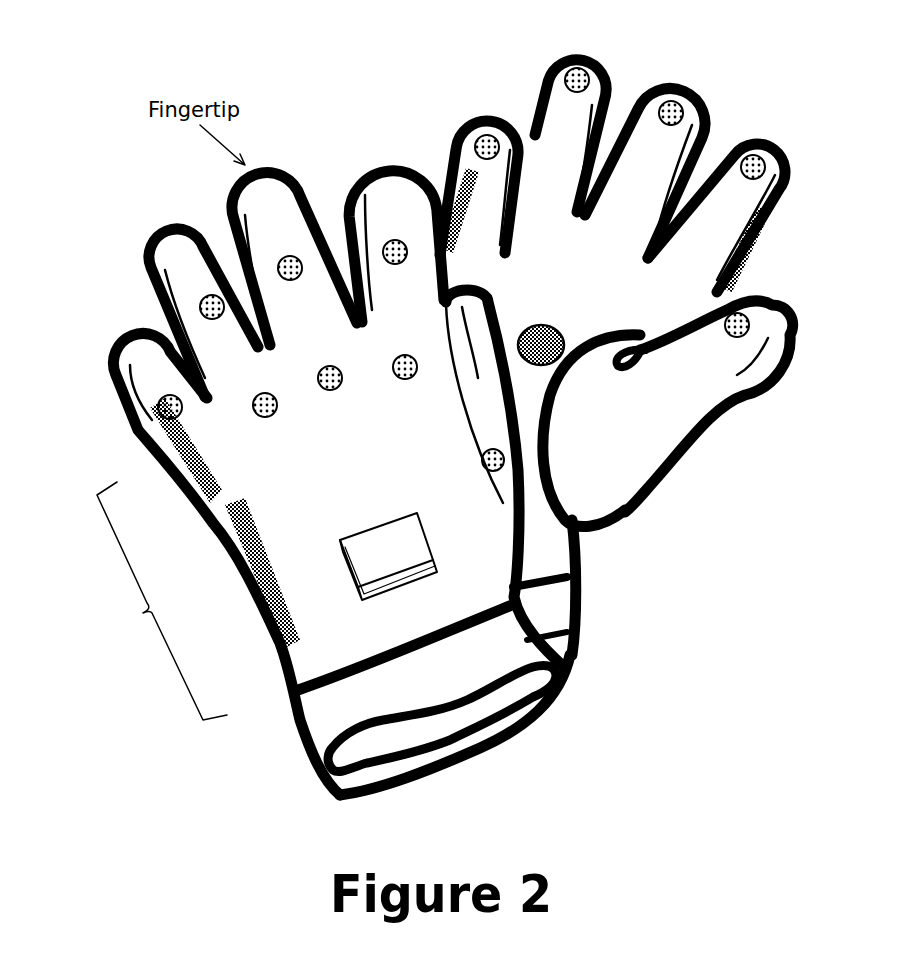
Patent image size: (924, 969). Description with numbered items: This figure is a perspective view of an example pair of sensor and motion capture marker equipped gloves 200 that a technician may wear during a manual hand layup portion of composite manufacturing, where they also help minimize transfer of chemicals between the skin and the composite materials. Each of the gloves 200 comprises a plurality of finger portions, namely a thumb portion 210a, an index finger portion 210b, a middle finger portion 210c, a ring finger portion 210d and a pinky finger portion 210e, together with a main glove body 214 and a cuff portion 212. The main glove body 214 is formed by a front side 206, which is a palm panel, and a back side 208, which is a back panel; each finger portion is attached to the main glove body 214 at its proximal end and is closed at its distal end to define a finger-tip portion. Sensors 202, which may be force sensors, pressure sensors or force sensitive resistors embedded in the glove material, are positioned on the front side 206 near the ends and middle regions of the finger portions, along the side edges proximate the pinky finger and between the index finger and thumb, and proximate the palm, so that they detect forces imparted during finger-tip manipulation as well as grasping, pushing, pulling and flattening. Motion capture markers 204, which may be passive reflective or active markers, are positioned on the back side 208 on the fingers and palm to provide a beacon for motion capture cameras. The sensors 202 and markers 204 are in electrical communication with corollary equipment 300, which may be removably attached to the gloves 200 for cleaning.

The gloves 200 is at (402, 413).
The sensors 202 is at (753, 179).
The motion capture markers 204 is at (265, 393).
The front side 206 is at (541, 400).
The back side 208 is at (327, 615).
The thumb portion 210a is at (783, 291).
The index finger portion 210b is at (788, 134).
The middle finger portion 210c is at (707, 95).
The ring finger portion 210d is at (613, 53).
The pinky finger portion 210e is at (453, 115).
The cuff portion 212 is at (307, 772).
The main glove body 214 is at (143, 613).
The corollary equipment 300 is at (385, 525).